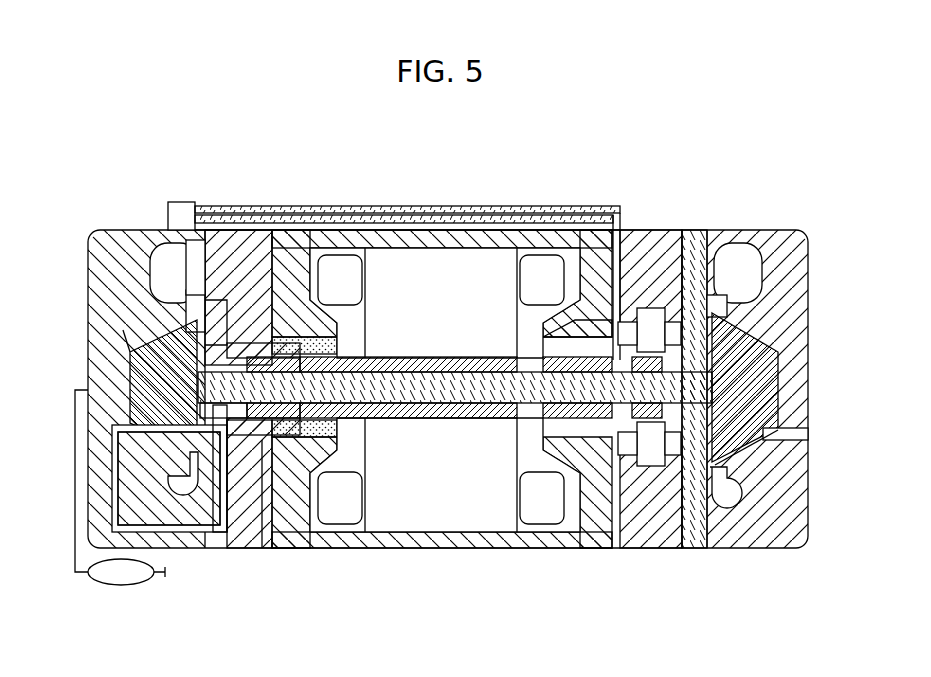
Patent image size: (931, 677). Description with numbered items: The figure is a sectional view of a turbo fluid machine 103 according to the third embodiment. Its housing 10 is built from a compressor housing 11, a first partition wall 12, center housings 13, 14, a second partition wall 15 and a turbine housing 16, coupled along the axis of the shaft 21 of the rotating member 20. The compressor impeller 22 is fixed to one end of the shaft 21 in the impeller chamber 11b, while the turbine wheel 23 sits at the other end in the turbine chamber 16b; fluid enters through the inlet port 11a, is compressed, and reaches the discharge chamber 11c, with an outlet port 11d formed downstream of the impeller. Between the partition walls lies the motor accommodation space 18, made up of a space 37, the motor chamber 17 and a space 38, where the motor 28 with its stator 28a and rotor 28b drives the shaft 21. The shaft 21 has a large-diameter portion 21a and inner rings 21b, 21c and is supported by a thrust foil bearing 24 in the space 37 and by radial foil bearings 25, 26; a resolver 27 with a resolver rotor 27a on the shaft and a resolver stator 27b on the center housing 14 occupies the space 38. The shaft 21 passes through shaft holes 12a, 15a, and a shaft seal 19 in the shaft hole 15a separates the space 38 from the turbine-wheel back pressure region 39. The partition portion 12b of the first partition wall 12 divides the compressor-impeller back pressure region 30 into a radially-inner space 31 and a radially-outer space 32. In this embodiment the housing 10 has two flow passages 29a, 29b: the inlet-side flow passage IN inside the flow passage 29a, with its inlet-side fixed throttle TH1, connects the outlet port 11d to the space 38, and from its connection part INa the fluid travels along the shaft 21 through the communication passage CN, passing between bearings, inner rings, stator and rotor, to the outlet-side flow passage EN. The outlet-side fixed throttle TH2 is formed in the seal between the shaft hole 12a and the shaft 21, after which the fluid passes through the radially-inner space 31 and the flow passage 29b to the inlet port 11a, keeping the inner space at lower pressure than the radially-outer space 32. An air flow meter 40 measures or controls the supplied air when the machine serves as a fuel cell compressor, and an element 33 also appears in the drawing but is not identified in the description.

The turbo fluid machine 103 is at (116, 200).
The housing 10 is at (137, 176).
The compressor housing 11 is at (157, 361).
The inlet port 11a is at (163, 386).
The impeller chamber 11b is at (190, 450).
The discharge chamber 11c is at (160, 300).
The outlet port 11d is at (165, 242).
The first partition wall 12 is at (252, 361).
The shaft hole 12a is at (263, 389).
The partition portion 12b is at (207, 327).
The center housing 13 is at (455, 236).
The center housing 14 is at (655, 245).
The second partition wall 15 is at (696, 262).
The shaft hole 15a is at (693, 374).
The turbine housing 16 is at (757, 361).
The turbine chamber 16b is at (745, 338).
The motor chamber 17 is at (400, 247).
The motor accommodation space 18 is at (478, 262).
The shaft seal 19 is at (779, 420).
The rotating member 20 is at (770, 613).
The shaft 21 is at (478, 405).
The large-diameter portion 21a is at (275, 387).
The inner ring 21b is at (408, 387).
The inner ring 21c is at (602, 387).
The compressor impeller 22 is at (225, 470).
The turbine wheel 23 is at (752, 422).
The thrust foil bearing 24 is at (262, 327).
The radial foil bearing 25 is at (300, 440).
The radial foil bearing 26 is at (602, 442).
The resolver 27 is at (620, 578).
The resolver rotor 27a is at (650, 440).
The resolver stator 27b is at (660, 462).
The motor 28 is at (452, 578).
The stator 28a is at (405, 500).
The rotor 28b is at (432, 425).
The flow passage 29a is at (415, 210).
The flow passage 29b is at (235, 533).
The compressor-impeller back pressure region 30 is at (113, 341).
The radially-inner space 31 is at (138, 370).
The radially-outer space 32 is at (193, 322).
The encoder disk 33 is at (176, 347).
The space 37 is at (262, 450).
The space 38 is at (740, 387).
The turbine-wheel back pressure region 39 is at (738, 362).
The air flow meter 40 is at (130, 585).
The communication passage CN is at (457, 420).
The outlet-side flow passage EN is at (151, 392).
The inlet-side flow passage IN is at (523, 212).
The connection part INa is at (612, 312).
The inlet-side fixed throttle TH1 is at (622, 298).
The outlet-side fixed throttle TH2 is at (292, 405).